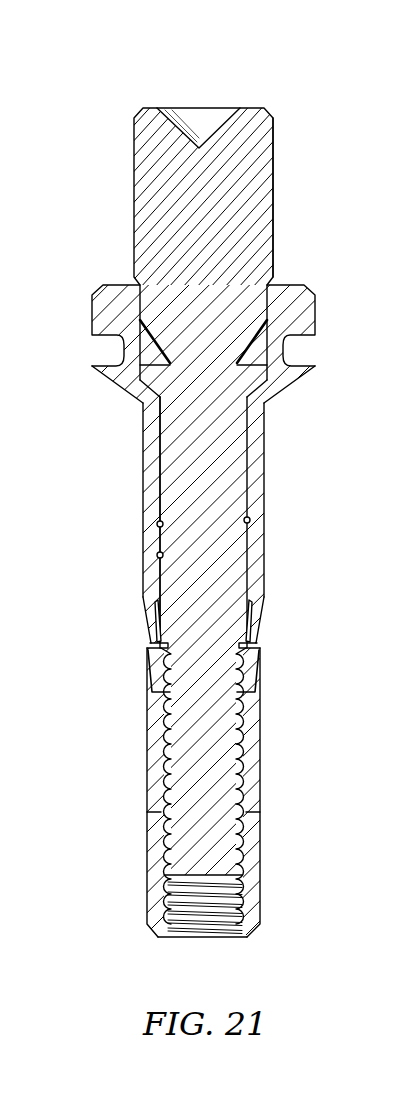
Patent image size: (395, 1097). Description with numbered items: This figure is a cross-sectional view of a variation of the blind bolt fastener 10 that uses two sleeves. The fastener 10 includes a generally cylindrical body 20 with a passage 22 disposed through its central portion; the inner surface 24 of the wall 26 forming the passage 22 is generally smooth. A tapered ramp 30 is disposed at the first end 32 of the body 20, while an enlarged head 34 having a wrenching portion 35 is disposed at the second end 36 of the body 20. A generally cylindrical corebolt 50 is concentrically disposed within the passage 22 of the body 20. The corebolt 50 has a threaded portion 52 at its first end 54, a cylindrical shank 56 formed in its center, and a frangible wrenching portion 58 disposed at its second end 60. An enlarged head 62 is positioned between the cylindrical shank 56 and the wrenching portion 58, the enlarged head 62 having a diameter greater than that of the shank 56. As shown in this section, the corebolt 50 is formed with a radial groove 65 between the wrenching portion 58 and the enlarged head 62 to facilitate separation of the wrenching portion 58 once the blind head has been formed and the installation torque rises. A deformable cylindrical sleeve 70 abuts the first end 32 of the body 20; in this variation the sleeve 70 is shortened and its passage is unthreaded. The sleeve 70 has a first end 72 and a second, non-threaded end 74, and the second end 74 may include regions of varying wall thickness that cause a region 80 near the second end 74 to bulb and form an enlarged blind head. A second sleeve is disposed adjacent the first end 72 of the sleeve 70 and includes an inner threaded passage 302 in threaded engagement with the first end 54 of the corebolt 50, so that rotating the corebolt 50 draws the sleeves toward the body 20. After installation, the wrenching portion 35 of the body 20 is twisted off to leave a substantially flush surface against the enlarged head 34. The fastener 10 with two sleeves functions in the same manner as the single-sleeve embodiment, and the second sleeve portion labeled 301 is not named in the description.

The fastener 10 is at (95, 118).
The frangible wrenching portion 58 is at (253, 165).
The second end of the corebolt 60 is at (273, 230).
The wrenching portion 35 is at (92, 303).
The radial groove 65 is at (138, 346).
The enlarged head 34 is at (92, 367).
The enlarged head 62 is at (150, 395).
The second end of the body 36 is at (286, 393).
The corebolt 50 is at (223, 462).
The body 20 is at (262, 485).
The cylindrical shank 56 is at (172, 477).
The passage 22 is at (250, 522).
The wall 26 is at (158, 526).
The inner surface 24 is at (158, 557).
The first end of the body 32 is at (263, 597).
The tapered ramp 30 is at (256, 628).
The region 80 is at (152, 682).
The second end of the sleeve 74 is at (262, 676).
The cylindrical sleeve 70 is at (147, 727).
The threaded portion 52 is at (260, 741).
The first end of the sleeve 72 is at (147, 773).
The first end of the corebolt 54 is at (245, 847).
The inner threaded passage 302 is at (168, 873).
The distal sleeve segment 301 is at (263, 870).